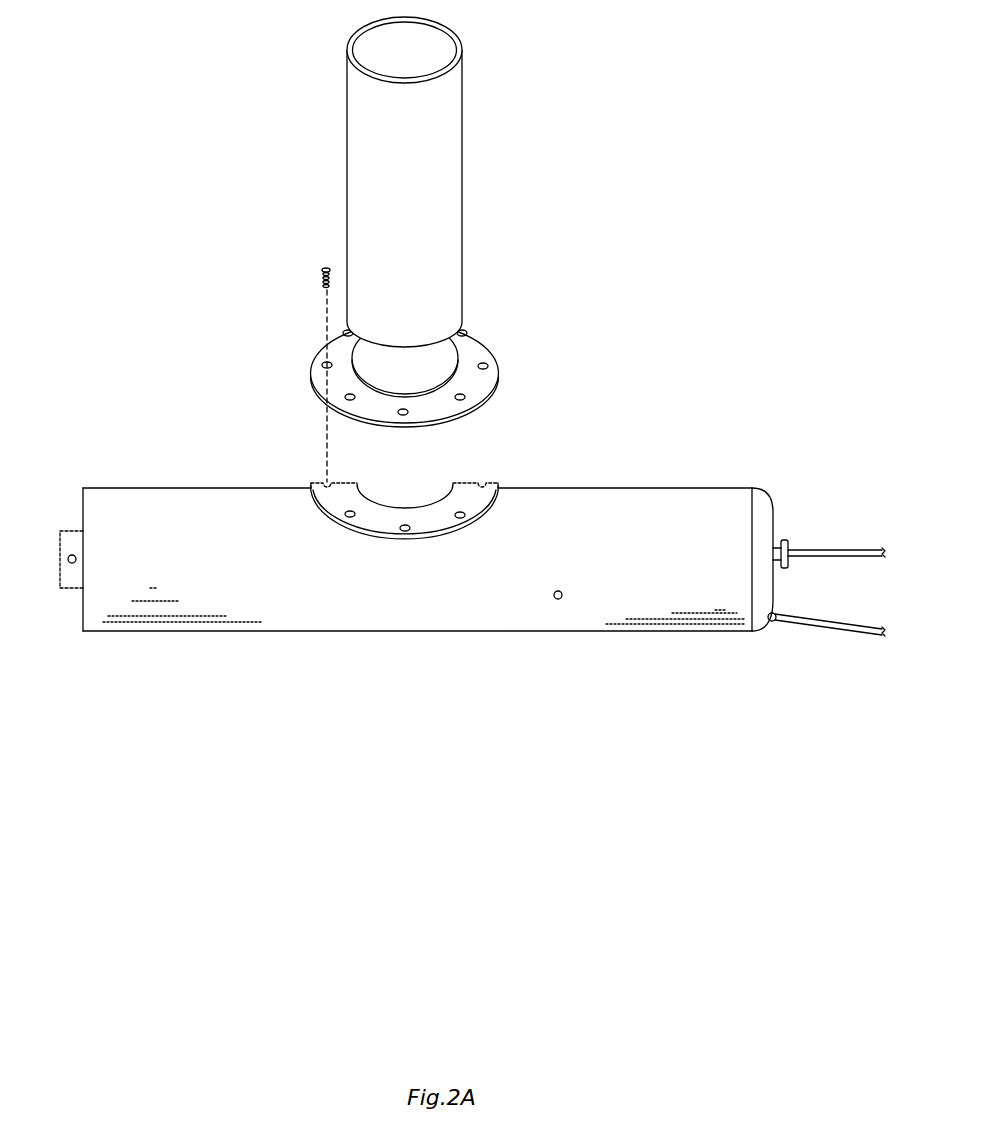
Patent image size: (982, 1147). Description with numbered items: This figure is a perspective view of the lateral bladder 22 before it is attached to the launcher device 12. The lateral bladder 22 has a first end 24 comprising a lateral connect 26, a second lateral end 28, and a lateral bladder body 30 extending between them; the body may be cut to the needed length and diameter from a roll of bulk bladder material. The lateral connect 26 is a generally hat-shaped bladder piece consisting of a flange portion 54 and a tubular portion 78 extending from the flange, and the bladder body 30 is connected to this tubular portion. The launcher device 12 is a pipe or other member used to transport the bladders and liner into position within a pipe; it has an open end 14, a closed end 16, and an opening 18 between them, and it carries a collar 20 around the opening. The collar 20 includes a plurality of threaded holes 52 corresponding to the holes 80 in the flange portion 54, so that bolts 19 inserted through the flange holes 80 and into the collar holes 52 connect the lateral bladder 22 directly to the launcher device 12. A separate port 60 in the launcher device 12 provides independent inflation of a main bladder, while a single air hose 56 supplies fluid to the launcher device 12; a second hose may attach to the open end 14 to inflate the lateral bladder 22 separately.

The launcher device 12 is at (250, 655).
The open end 14 is at (770, 518).
The closed end 16 is at (83, 505).
The opening 18 is at (410, 506).
The bolts 19 is at (320, 279).
The collar 20 is at (423, 503).
The lateral bladder 22 is at (376, 181).
The first end 24 is at (340, 408).
The lateral connect 26 is at (391, 373).
The second lateral end 28 is at (460, 43).
The lateral bladder body 30 is at (457, 196).
The holes 52 is at (402, 527).
The flange portion 54 is at (482, 381).
The air hose 56 is at (815, 622).
The port 60 is at (562, 592).
The tubular portion 78 is at (447, 347).
The holes 80 is at (346, 396).